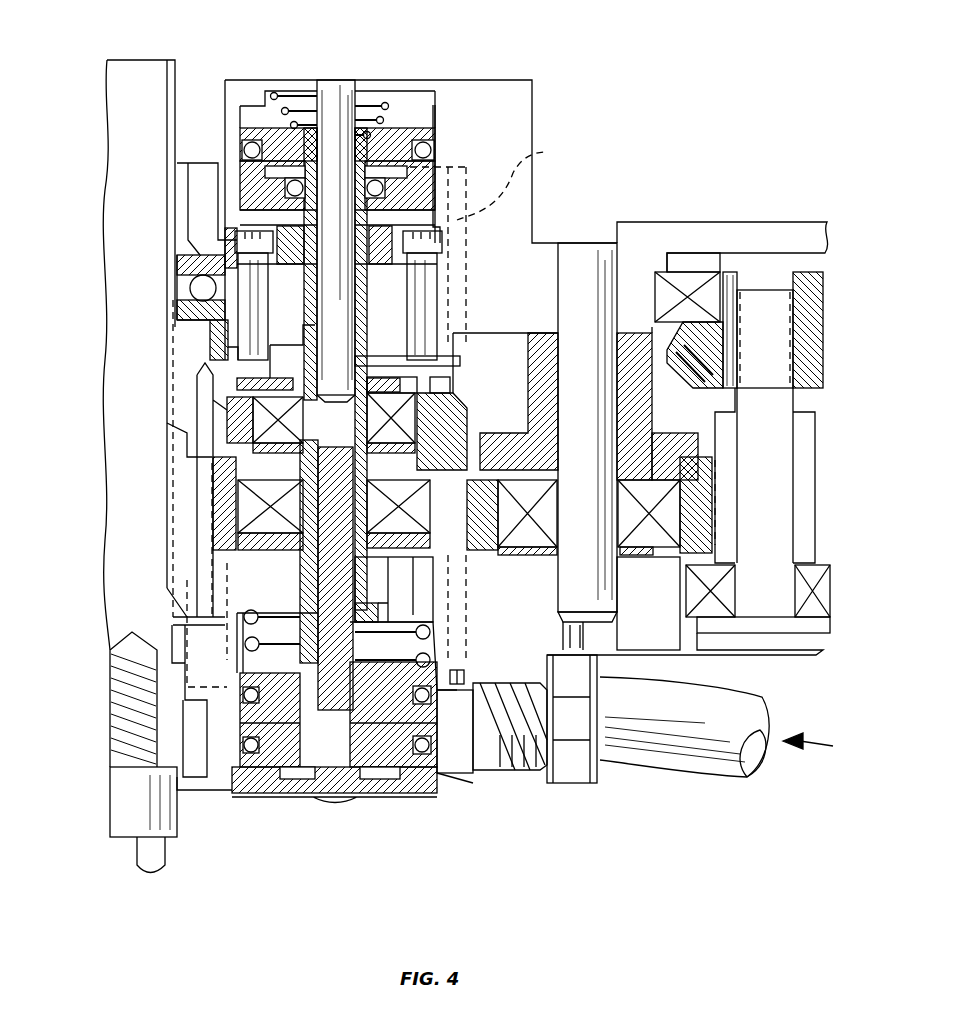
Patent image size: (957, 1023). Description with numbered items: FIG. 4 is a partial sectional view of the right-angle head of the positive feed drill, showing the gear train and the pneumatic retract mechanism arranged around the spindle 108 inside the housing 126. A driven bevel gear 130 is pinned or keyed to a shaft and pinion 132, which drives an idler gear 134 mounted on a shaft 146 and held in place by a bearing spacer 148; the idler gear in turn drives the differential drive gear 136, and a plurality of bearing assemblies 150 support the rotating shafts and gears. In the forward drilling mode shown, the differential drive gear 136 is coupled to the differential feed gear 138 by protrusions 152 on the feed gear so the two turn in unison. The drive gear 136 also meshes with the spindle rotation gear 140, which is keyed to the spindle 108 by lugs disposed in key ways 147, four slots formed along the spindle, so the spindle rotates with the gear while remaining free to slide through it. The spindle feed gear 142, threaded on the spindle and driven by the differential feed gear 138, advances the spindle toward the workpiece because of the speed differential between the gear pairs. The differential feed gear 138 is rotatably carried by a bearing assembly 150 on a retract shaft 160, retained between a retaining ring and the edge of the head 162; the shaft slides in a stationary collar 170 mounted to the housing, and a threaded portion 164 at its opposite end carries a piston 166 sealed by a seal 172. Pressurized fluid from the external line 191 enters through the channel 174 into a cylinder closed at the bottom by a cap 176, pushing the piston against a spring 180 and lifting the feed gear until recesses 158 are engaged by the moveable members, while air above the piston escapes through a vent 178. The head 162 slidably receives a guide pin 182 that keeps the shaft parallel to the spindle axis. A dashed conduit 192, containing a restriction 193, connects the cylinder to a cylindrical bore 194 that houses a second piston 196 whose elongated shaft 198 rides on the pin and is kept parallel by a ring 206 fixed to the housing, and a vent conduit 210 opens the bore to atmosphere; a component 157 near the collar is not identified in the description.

The spindle 108 is at (152, 135).
The housing 126 is at (480, 87).
The driven bevel gear 130 is at (707, 343).
The shaft and pinion 132 is at (775, 597).
The idler gear 134 is at (682, 553).
The differential drive gear 136 is at (227, 525).
The differential feed gear 138 is at (225, 452).
The spindle rotation gear 140 is at (183, 485).
The spindle feed gear 142 is at (183, 403).
The shaft 146 is at (583, 257).
The key ways 147 is at (165, 82).
The bearing spacer 148 is at (527, 357).
The bearing assemblies 150 is at (183, 262).
The protrusions 152 is at (466, 450).
The collar 157 is at (257, 385).
The recesses 158 is at (425, 387).
The retract shaft 160 is at (337, 594).
The head 162 is at (360, 368).
The threaded portion 164 is at (460, 670).
The piston 166 is at (273, 703).
The stationary collar 170 is at (300, 585).
The seal 172 is at (243, 697).
The channel 174 is at (450, 705).
The cap 176 is at (347, 790).
The vent 178 is at (408, 583).
The spring 180 is at (252, 638).
The guide pin 182 is at (325, 87).
The external line 191 is at (653, 750).
The conduit 192 is at (521, 180).
The restriction 193 is at (520, 757).
The cylindrical bore 194 is at (252, 115).
The second piston 196 is at (392, 140).
The elongated shaft 198 is at (407, 170).
The ring 206 is at (287, 92).
The vent conduit 210 is at (200, 712).